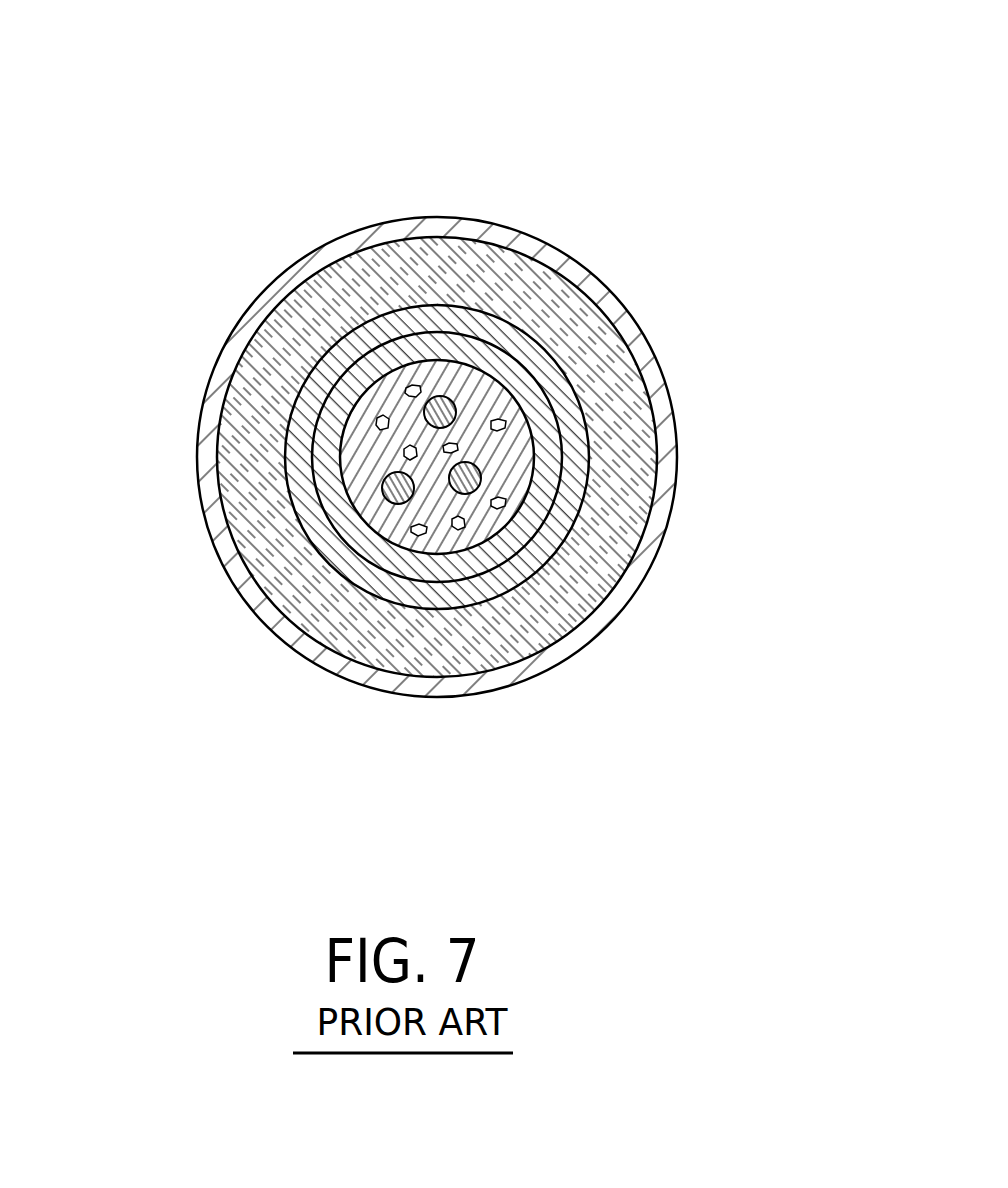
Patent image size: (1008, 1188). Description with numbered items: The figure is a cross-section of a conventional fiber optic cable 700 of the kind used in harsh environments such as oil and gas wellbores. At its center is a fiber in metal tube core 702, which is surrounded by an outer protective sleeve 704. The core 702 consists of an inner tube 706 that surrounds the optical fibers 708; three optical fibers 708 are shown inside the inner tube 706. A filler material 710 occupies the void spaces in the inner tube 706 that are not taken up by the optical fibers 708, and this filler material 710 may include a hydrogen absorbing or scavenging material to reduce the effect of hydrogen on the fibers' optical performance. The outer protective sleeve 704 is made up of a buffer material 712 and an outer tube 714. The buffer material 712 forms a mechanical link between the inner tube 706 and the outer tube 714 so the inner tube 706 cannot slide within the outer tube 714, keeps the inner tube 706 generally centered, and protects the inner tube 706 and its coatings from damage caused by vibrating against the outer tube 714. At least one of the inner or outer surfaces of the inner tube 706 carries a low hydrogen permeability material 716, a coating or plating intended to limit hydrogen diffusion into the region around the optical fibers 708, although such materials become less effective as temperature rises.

The fiber optic cable 700 is at (436, 433).
The fiber in metal tube (FIMT) core 702 is at (446, 325).
The outer protective sleeve 704 is at (252, 277).
The inner tube 706 is at (498, 548).
The optical fibers 708 is at (397, 498).
The filler material 710 is at (492, 448).
The buffer material 712 is at (340, 290).
The outer tube 714 is at (203, 393).
The low hydrogen permeability material 716 is at (520, 330).